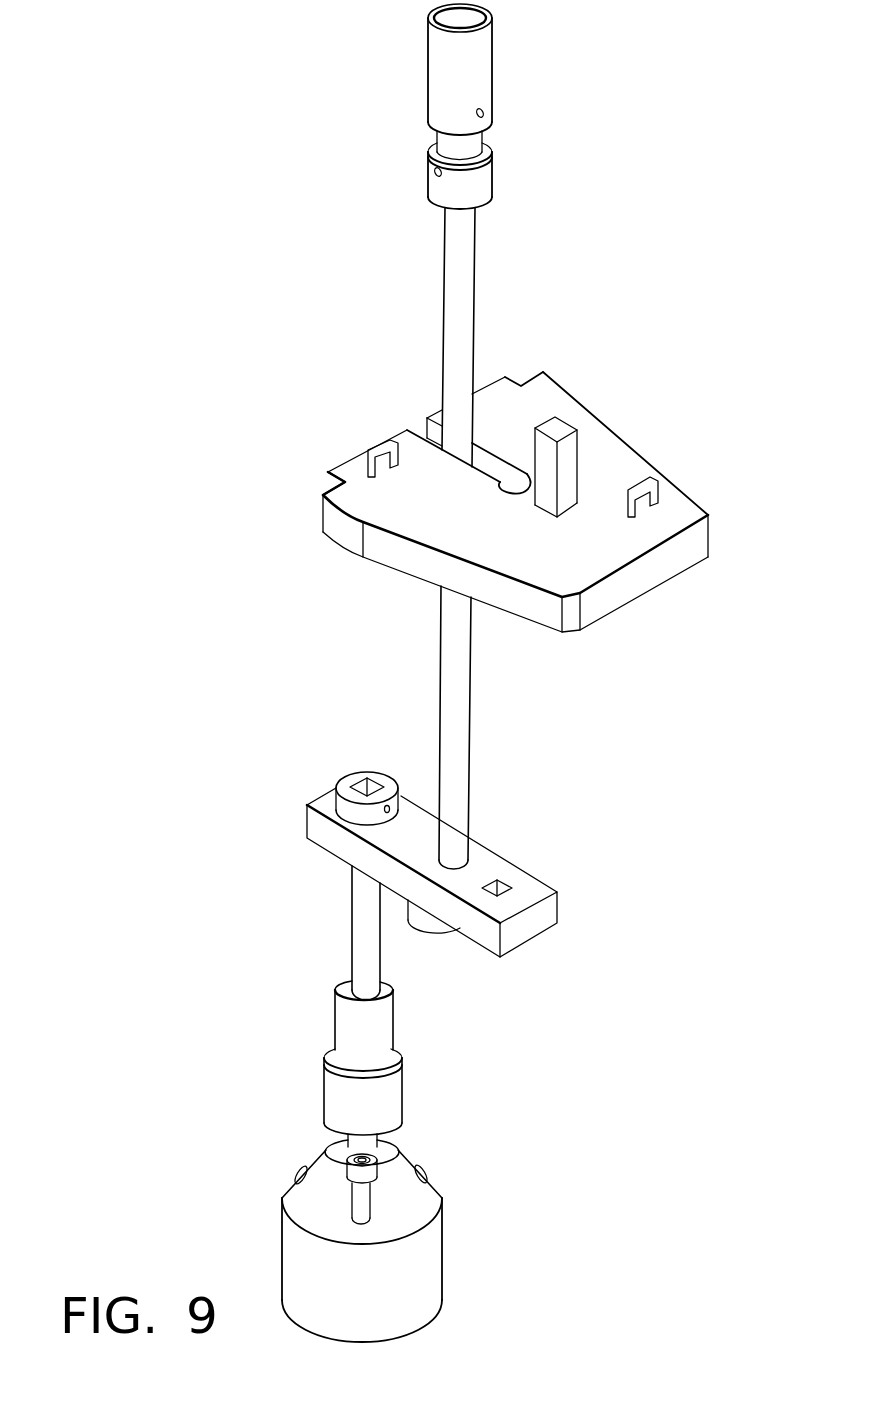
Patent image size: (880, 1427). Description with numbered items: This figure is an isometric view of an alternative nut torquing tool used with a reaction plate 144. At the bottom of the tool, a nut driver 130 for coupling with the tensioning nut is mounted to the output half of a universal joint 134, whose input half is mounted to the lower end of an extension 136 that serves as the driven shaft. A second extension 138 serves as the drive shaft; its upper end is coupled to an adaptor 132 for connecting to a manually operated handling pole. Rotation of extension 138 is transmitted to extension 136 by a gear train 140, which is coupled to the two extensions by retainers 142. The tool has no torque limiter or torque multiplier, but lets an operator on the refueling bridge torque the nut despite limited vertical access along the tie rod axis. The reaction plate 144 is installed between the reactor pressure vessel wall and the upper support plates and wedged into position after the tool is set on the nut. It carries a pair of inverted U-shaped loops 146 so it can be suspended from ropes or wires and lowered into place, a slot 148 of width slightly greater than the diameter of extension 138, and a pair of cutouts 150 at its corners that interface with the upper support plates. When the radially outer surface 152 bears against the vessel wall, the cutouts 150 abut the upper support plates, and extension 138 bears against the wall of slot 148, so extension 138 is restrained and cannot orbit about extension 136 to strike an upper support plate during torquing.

The nut driver 130 is at (442, 1241).
The adaptor 132 is at (492, 78).
The universal joint 134 is at (402, 1069).
The extension 136 is at (350, 942).
The extension 138 is at (470, 732).
The gear train 140 is at (527, 873).
The retainers 142 is at (350, 772).
The reaction plate 144 is at (628, 435).
The inverted U-shaped loops 146 is at (641, 475).
The slot 148 is at (500, 492).
The cutouts 150 is at (510, 378).
The radially outer surface 152 is at (647, 577).